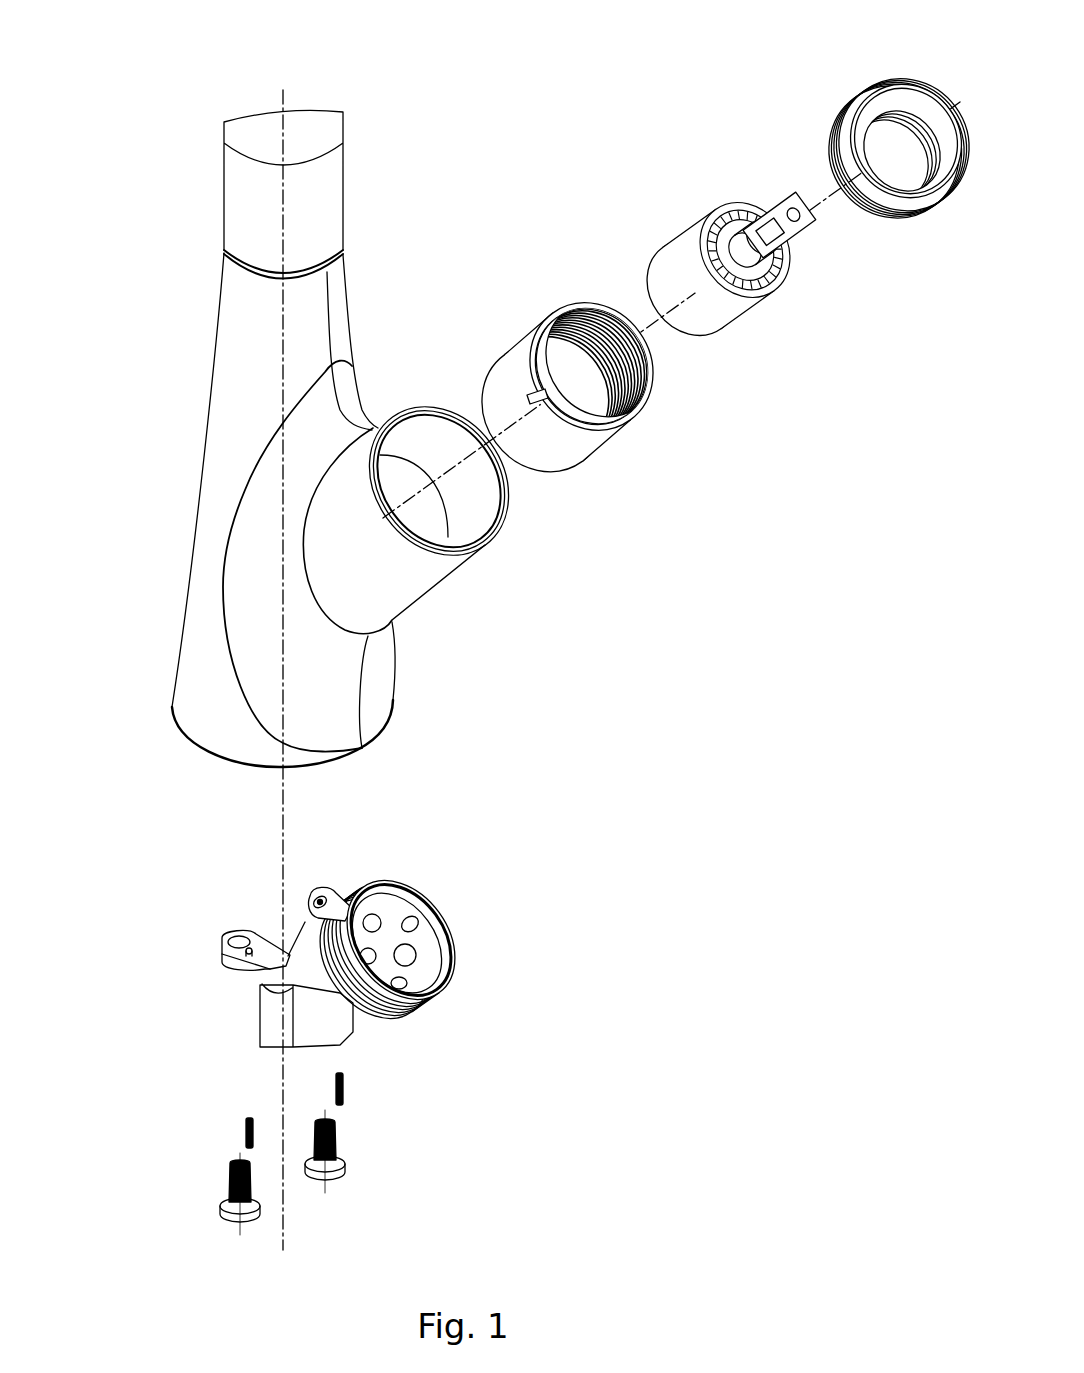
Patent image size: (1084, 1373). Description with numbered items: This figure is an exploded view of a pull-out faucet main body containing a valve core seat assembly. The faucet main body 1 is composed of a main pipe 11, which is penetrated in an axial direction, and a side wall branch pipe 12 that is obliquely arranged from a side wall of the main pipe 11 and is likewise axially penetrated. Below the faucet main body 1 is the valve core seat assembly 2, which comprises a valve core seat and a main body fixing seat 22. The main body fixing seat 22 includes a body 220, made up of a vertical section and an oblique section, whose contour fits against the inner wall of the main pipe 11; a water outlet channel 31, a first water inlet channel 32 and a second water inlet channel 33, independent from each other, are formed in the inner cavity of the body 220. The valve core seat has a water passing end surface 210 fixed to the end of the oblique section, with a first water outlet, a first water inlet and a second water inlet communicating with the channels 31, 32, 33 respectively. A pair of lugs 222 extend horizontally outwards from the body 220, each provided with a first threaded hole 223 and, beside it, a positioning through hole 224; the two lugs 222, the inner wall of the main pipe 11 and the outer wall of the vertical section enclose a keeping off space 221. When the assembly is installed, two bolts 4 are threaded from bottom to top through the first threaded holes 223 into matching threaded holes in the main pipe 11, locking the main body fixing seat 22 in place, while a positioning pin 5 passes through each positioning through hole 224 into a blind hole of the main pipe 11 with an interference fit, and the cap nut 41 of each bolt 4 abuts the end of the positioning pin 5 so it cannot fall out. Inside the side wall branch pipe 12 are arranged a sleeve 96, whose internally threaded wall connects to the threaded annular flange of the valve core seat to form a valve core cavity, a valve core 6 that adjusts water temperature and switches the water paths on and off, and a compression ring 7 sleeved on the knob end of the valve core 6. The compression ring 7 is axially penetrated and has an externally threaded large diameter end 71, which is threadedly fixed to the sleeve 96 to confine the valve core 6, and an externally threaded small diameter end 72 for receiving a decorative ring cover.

The faucet main body 1 is at (247, 378).
The main pipe 11 is at (336, 327).
The side wall branch pipe 12 is at (422, 570).
The valve core seat assembly 2 is at (409, 908).
The water passing end surface 210 is at (372, 923).
The water outlet channel 31 is at (405, 955).
The first water inlet channel 32 is at (332, 893).
The second water inlet channel 33 is at (412, 1003).
The main body fixing seat 22 is at (196, 955).
The body 220 is at (249, 1035).
The keeping off space 221 is at (297, 935).
The lug 222 is at (307, 912).
The first threaded hole 223 is at (318, 900).
The positioning through hole 224 is at (248, 954).
The bolt 4 is at (310, 1194).
The cap nut 41 is at (345, 1172).
The positioning pin 5 is at (246, 1133).
The valve core 6 is at (727, 320).
The sleeve 96 is at (570, 465).
The compression ring 7 is at (871, 151).
The large diameter end 71 is at (880, 218).
The small diameter end 72 is at (878, 98).